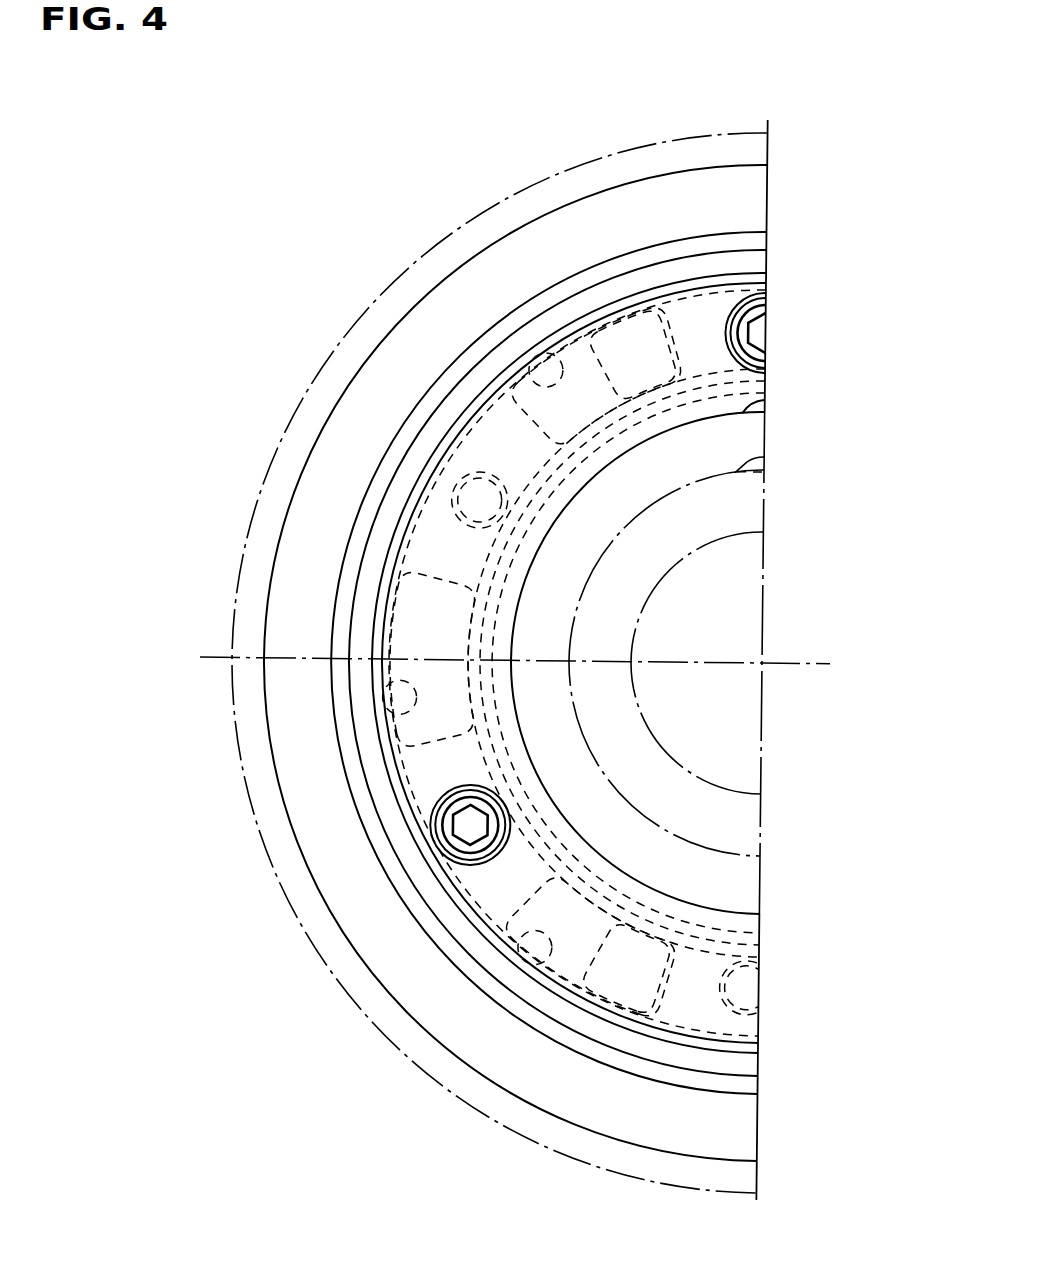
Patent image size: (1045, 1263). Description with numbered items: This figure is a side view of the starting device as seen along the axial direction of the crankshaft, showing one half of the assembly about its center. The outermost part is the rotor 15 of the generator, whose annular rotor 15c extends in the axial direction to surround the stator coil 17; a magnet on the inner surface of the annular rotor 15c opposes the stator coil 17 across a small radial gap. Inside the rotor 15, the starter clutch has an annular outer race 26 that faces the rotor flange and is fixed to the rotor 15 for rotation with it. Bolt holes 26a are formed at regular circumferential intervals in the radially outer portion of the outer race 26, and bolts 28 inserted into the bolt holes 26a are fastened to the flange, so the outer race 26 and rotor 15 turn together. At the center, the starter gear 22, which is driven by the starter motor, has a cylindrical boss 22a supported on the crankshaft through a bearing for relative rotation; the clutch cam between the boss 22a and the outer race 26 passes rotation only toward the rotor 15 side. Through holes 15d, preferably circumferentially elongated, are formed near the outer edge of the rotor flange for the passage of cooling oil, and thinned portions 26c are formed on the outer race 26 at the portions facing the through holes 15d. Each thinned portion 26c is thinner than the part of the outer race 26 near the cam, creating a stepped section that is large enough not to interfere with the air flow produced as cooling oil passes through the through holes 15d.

The rotor 15 is at (730, 233).
The annular rotor 15c is at (613, 265).
The through hole 15d is at (517, 381).
The stator coil 17 is at (767, 402).
The starter gear 22 is at (522, 190).
The cylindrical boss 22a is at (746, 468).
The outer race 26 is at (534, 352).
The bolt hole 26a is at (748, 300).
The thinned portion 26c is at (599, 319).
The bolt 28 is at (743, 297).